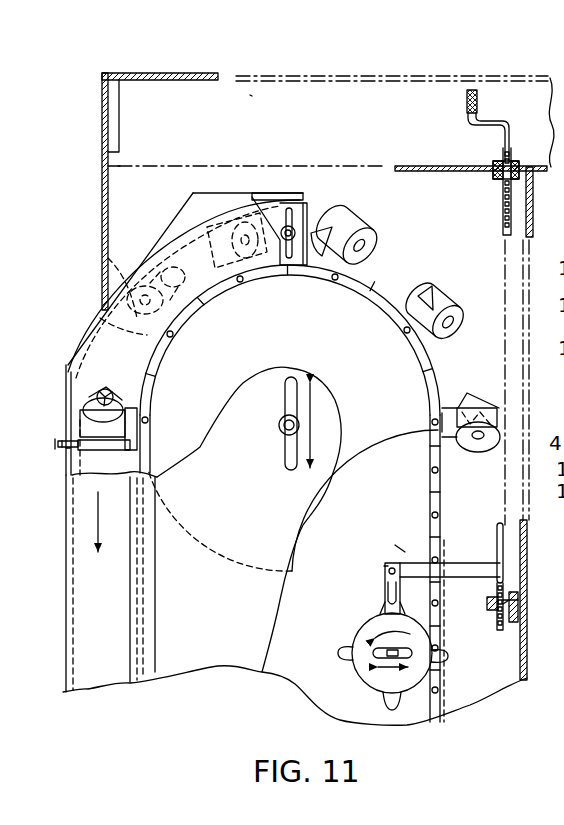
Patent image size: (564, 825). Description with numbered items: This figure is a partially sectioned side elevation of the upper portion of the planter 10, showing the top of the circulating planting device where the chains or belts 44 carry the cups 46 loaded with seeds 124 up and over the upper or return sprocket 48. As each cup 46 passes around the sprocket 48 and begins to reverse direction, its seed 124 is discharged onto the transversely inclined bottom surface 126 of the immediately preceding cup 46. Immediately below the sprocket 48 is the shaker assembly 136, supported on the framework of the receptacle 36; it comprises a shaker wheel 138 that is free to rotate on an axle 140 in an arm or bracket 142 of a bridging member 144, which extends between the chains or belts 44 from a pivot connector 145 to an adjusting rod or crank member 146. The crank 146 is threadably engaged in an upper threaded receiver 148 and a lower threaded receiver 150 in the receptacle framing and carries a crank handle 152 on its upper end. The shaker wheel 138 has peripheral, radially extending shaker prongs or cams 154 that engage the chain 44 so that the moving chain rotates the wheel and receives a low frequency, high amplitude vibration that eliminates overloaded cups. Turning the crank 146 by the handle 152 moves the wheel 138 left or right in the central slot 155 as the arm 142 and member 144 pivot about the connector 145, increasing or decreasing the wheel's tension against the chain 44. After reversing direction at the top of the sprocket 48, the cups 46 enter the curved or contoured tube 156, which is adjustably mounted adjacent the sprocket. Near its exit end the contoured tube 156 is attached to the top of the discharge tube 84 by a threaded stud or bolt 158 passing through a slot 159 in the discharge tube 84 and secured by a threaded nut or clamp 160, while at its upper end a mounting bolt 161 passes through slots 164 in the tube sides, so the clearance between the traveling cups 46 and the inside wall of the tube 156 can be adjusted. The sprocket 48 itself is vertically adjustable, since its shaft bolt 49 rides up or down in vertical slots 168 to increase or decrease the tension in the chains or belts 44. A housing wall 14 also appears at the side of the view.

The planter 10 is at (156, 72).
The housing side wall 14 is at (527, 566).
The receptacle 36 is at (225, 113).
The chains or belts 44 is at (438, 448).
The cups 46 is at (345, 236).
The upper or return sprocket 48 is at (207, 547).
The shaft bolt 49 is at (279, 426).
The discharge tube 84 is at (70, 392).
The seeds 124 is at (203, 320).
The transversely inclined bottom surface 126 is at (106, 260).
The shaker assembly 136 is at (381, 576).
The shaker wheel 138 is at (358, 628).
The axle 140 is at (373, 656).
The arm or bracket 142 is at (404, 554).
The bridging member 144 is at (462, 563).
The pivot connector 145 is at (384, 566).
The adjusting rod or crank member 146 is at (503, 198).
The upper threaded receiver 148 is at (493, 169).
The lower threaded receiver 150 is at (524, 624).
The crank handle 152 is at (466, 100).
The shaker prongs or cams 154 is at (340, 654).
The central slot 155 is at (447, 658).
The curved or contoured tube 156 is at (137, 268).
The threaded stud or bolt 158 is at (64, 451).
The slot 159 is at (72, 428).
The threaded nut or clamp 160 is at (57, 444).
The bolt 161 is at (299, 232).
The slots 164 is at (295, 230).
The vertical slots 168 is at (286, 458).